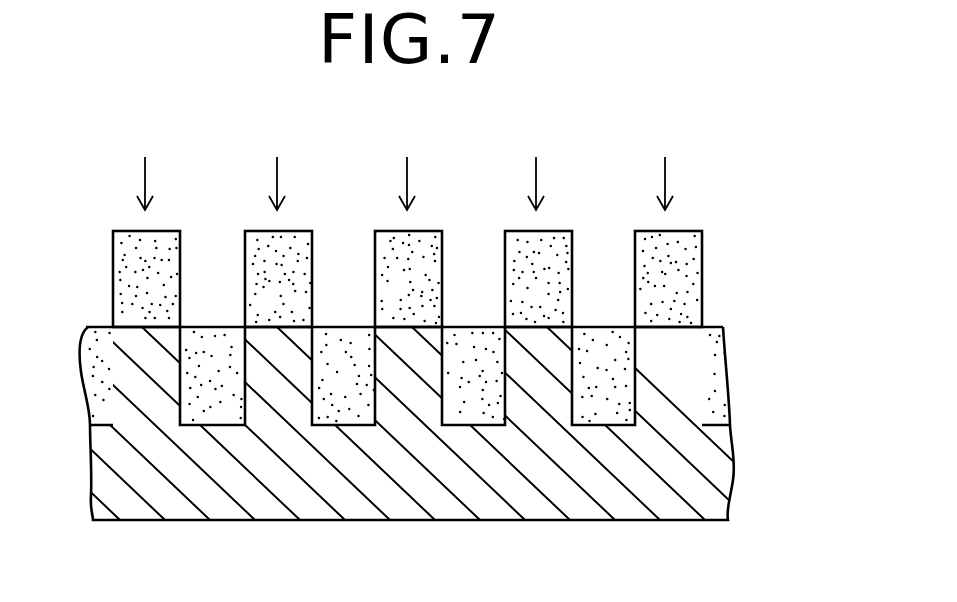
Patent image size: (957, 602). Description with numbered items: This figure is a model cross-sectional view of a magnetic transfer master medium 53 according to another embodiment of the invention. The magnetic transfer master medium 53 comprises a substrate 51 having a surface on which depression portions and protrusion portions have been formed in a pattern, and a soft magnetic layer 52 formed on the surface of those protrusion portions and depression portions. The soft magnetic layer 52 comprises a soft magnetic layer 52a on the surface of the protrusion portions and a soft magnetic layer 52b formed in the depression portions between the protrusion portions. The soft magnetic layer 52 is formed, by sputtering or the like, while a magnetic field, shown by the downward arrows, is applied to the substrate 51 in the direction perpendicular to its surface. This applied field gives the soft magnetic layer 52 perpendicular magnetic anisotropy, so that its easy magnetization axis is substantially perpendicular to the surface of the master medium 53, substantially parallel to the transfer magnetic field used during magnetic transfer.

The substrate 51 is at (706, 483).
The soft magnetic layer 52 is at (476, 328).
The soft magnetic layer of the surface of the protrusion portions 52a is at (682, 291).
The soft magnetic layer formed in the depression portions 52b is at (710, 388).
The magnetic transfer master medium 53 is at (744, 228).